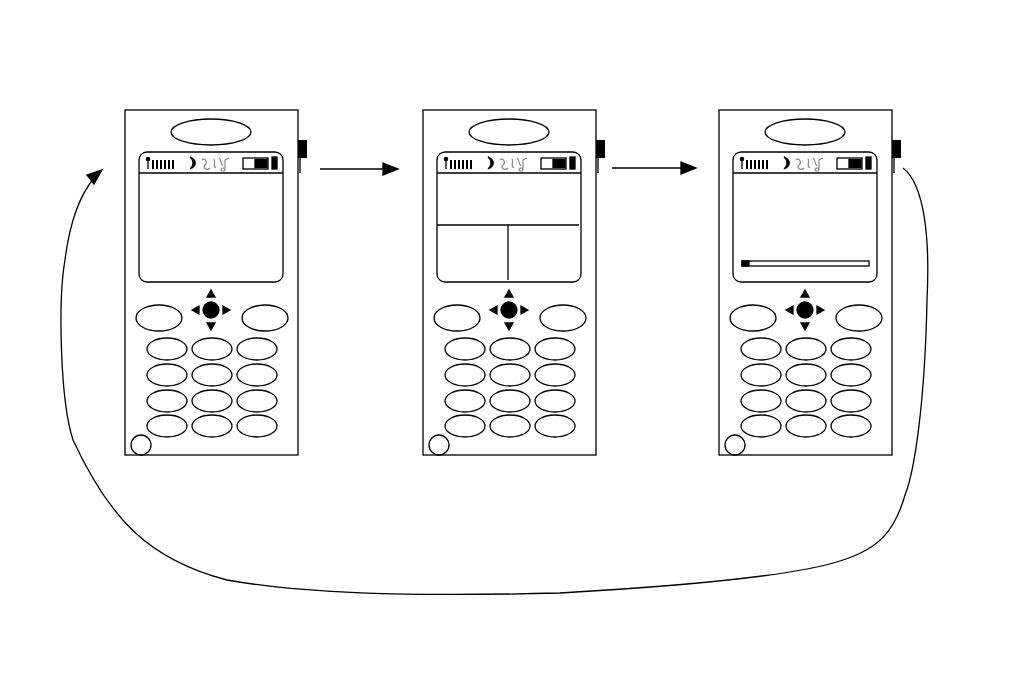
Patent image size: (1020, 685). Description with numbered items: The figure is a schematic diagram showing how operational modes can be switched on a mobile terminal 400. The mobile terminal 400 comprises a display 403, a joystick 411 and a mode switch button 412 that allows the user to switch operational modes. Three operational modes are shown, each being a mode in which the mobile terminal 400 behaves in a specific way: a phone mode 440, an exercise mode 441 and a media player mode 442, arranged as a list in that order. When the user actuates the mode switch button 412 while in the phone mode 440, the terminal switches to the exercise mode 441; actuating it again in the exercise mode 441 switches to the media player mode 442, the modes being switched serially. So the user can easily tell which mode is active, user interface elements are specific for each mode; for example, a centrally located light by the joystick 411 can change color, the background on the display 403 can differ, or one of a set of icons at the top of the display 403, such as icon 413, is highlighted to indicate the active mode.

The mobile terminal 400 is at (184, 60).
The display 403 is at (283, 240).
The joystick 411 is at (222, 313).
The mode switch button 412 is at (303, 140).
The mode indicator icon 413 is at (213, 140).
The phone mode 440 is at (211, 301).
The exercise mode 441 is at (507, 300).
The media player mode 442 is at (805, 300).